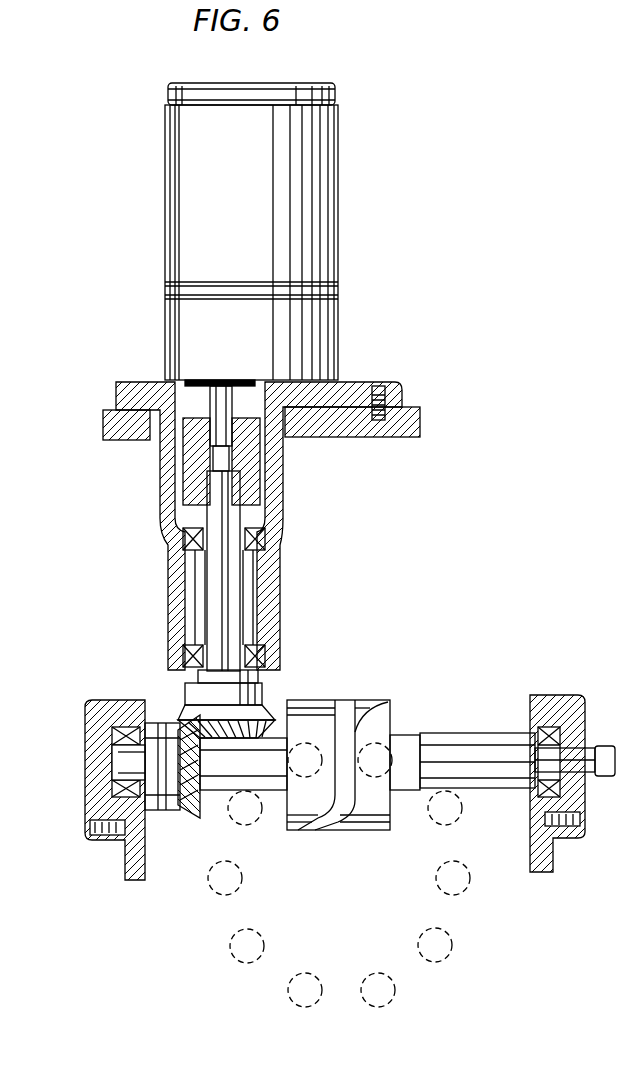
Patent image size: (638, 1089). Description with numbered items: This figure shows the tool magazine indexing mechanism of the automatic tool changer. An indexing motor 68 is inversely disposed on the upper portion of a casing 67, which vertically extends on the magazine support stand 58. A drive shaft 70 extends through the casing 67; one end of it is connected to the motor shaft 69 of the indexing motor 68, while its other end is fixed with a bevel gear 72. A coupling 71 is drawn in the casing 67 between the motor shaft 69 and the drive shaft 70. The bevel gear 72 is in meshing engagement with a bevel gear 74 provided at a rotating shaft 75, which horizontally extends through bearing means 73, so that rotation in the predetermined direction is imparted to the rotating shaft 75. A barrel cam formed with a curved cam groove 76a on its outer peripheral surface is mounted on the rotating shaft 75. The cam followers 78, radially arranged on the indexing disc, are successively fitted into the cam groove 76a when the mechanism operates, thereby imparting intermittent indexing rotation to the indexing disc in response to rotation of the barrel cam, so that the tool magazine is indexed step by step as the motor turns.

The magazine support stand 58 is at (350, 437).
The casing 67 is at (170, 492).
The indexing motor 68 is at (175, 192).
The motor shaft 69 is at (213, 398).
The drive shaft 70 is at (234, 598).
The coupling 71 is at (258, 490).
The bevel gear 72 is at (272, 716).
The bearing means 73 is at (115, 738).
The bevel gear 74 is at (185, 800).
The rotating shaft 75 is at (458, 745).
The cam groove 76a is at (335, 703).
The cam followers 78 is at (232, 950).